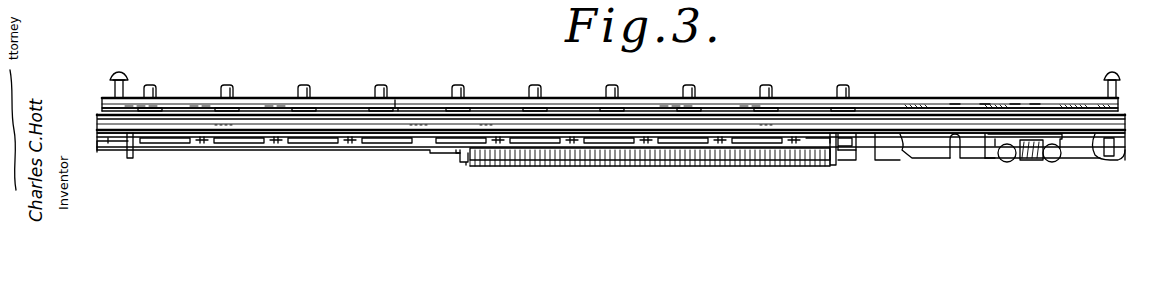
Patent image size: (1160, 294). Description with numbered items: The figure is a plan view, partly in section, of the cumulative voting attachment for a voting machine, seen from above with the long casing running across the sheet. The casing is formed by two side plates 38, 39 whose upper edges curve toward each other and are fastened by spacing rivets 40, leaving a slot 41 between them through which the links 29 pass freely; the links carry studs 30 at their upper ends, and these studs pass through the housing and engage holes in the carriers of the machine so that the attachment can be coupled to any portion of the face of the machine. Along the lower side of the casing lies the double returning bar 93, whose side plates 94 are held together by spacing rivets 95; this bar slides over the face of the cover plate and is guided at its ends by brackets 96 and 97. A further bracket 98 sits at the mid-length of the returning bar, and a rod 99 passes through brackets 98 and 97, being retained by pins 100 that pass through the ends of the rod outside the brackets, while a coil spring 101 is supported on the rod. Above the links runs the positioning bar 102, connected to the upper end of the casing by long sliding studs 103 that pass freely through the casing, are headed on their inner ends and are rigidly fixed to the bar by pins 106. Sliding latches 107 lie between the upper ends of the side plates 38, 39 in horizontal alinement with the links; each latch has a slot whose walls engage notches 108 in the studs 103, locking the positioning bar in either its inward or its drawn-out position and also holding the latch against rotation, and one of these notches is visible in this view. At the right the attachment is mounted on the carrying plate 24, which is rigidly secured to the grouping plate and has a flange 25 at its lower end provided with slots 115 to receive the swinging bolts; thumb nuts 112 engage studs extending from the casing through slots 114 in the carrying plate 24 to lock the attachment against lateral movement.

The carrying plate 24 is at (910, 148).
The flange 25 is at (930, 160).
The links 29 is at (594, 103).
The studs 30 is at (224, 89).
The side plate 38 is at (395, 104).
The side plate 39 is at (399, 111).
The spacing rivets 40 is at (265, 104).
The slot 41 is at (405, 108).
The double returning bar 93 is at (278, 161).
The side plates 94 is at (430, 134).
The spacing rivets 95 is at (190, 145).
The bracket 96 is at (130, 158).
The bracket 97 is at (832, 166).
The bracket 98 is at (466, 166).
The rod 99 is at (560, 158).
The pins 100 is at (463, 166).
The coil spring 101 is at (535, 166).
The positioning bar 102 is at (942, 125).
The sliding studs 103 is at (123, 86).
The pins 106 is at (107, 123).
The sliding latches 107 is at (103, 104).
The notches 108 is at (117, 73).
The thumb nuts 112 is at (1011, 165).
The slots 114 is at (880, 138).
The slots 115 is at (956, 160).